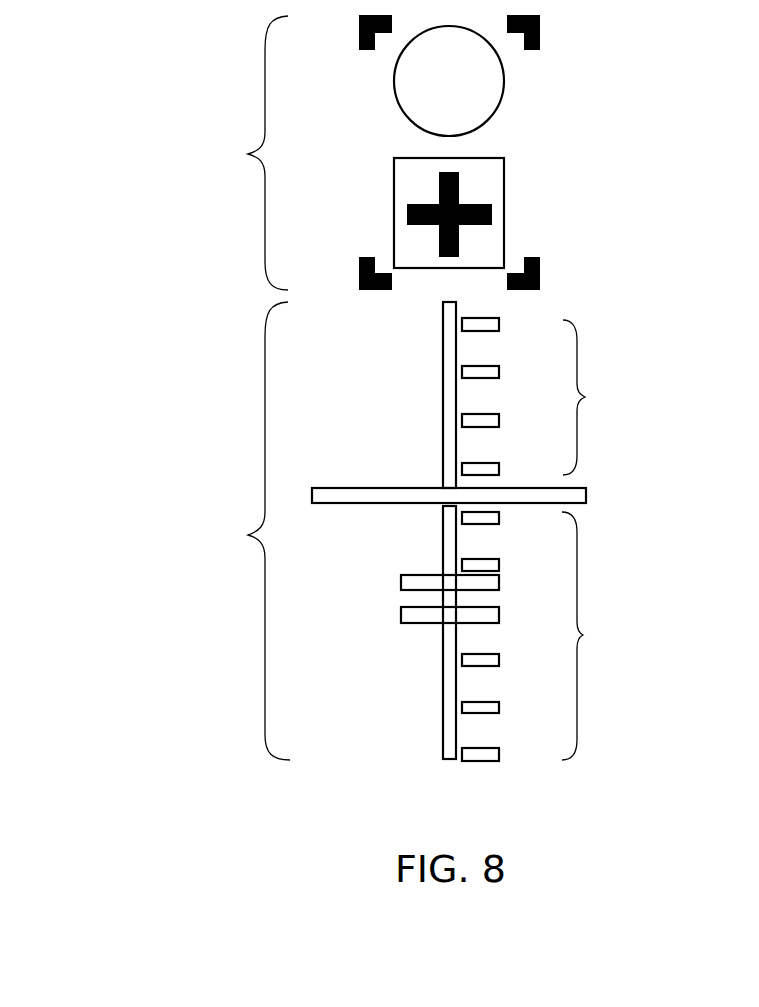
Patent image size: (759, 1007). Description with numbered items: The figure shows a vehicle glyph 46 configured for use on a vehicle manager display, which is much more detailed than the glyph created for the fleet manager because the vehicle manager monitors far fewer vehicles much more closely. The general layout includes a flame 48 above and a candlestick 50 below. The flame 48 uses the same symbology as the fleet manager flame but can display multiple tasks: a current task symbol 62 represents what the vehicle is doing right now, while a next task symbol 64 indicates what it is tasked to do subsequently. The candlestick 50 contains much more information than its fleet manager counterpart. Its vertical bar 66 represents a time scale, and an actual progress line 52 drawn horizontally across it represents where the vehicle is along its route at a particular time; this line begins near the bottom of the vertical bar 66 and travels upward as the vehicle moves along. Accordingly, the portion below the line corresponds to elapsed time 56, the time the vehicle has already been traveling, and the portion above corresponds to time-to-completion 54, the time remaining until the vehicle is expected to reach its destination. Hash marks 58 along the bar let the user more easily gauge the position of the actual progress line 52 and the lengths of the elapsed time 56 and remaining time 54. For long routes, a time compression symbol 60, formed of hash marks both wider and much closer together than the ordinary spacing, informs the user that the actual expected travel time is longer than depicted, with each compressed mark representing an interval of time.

The vehicle glyph 46 is at (208, 656).
The flame 48 is at (248, 154).
The candlestick 50 is at (248, 535).
The actual progress line 52 is at (587, 492).
The time-to-completion 54 is at (585, 397).
The elapsed time 56 is at (583, 635).
The hash marks 58 is at (500, 660).
The time compression symbol 60 is at (404, 597).
The current task symbol 62 is at (504, 214).
The next task symbol 64 is at (505, 81).
The vertical bar 66 is at (443, 395).